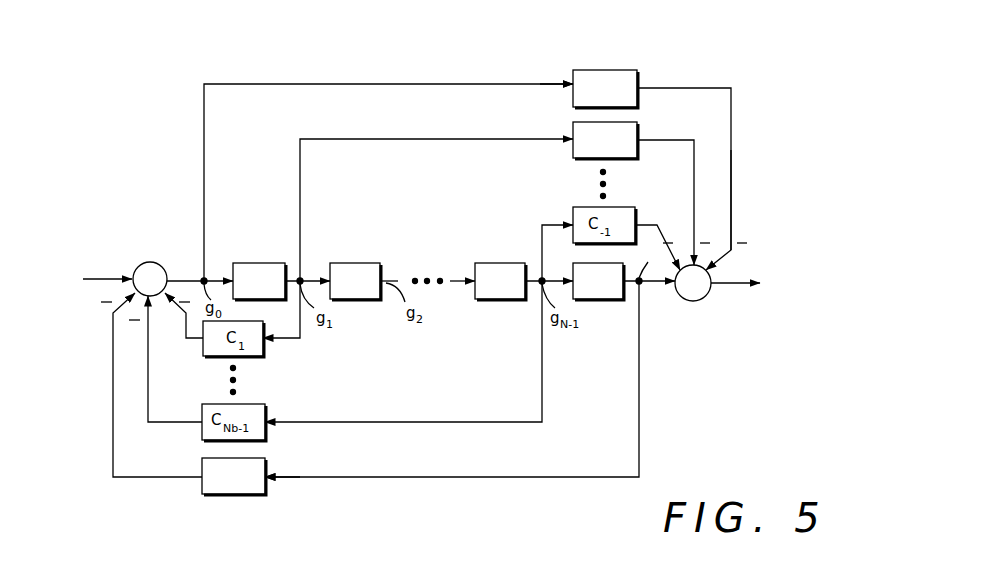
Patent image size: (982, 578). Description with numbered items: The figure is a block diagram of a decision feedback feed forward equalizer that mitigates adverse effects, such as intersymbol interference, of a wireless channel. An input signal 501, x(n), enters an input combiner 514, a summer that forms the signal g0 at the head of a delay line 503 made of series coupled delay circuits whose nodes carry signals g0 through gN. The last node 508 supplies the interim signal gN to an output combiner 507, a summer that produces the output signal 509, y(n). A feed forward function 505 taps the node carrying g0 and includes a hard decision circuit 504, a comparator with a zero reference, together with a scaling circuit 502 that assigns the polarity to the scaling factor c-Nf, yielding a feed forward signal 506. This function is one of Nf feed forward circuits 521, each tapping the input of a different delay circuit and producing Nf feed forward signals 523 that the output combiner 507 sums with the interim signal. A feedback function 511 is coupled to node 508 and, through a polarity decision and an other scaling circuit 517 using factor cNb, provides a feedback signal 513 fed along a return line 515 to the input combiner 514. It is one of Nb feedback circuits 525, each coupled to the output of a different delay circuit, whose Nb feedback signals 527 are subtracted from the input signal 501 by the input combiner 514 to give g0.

The input signal 501 is at (82, 248).
The scaling circuit 502 is at (617, 66).
The delay line 503 is at (418, 260).
The hard decision circuit 504 is at (570, 90).
The feed forward function 505 is at (458, 67).
The feed forward signal 506 is at (707, 88).
The output combiner 507 is at (693, 301).
The node 508 is at (641, 284).
The output signal 509 is at (777, 273).
The feedback function 511 is at (287, 498).
The feedback signal 513 is at (112, 436).
The input combiner 514 is at (155, 262).
The input line to coefficient block CNb 515 is at (272, 472).
The other scaling circuit 517 is at (220, 498).
The feed forward circuits 521 is at (512, 163).
The feed forward signals 523 is at (742, 162).
The feedback circuits 525 is at (343, 405).
The feedback signals 527 is at (104, 388).